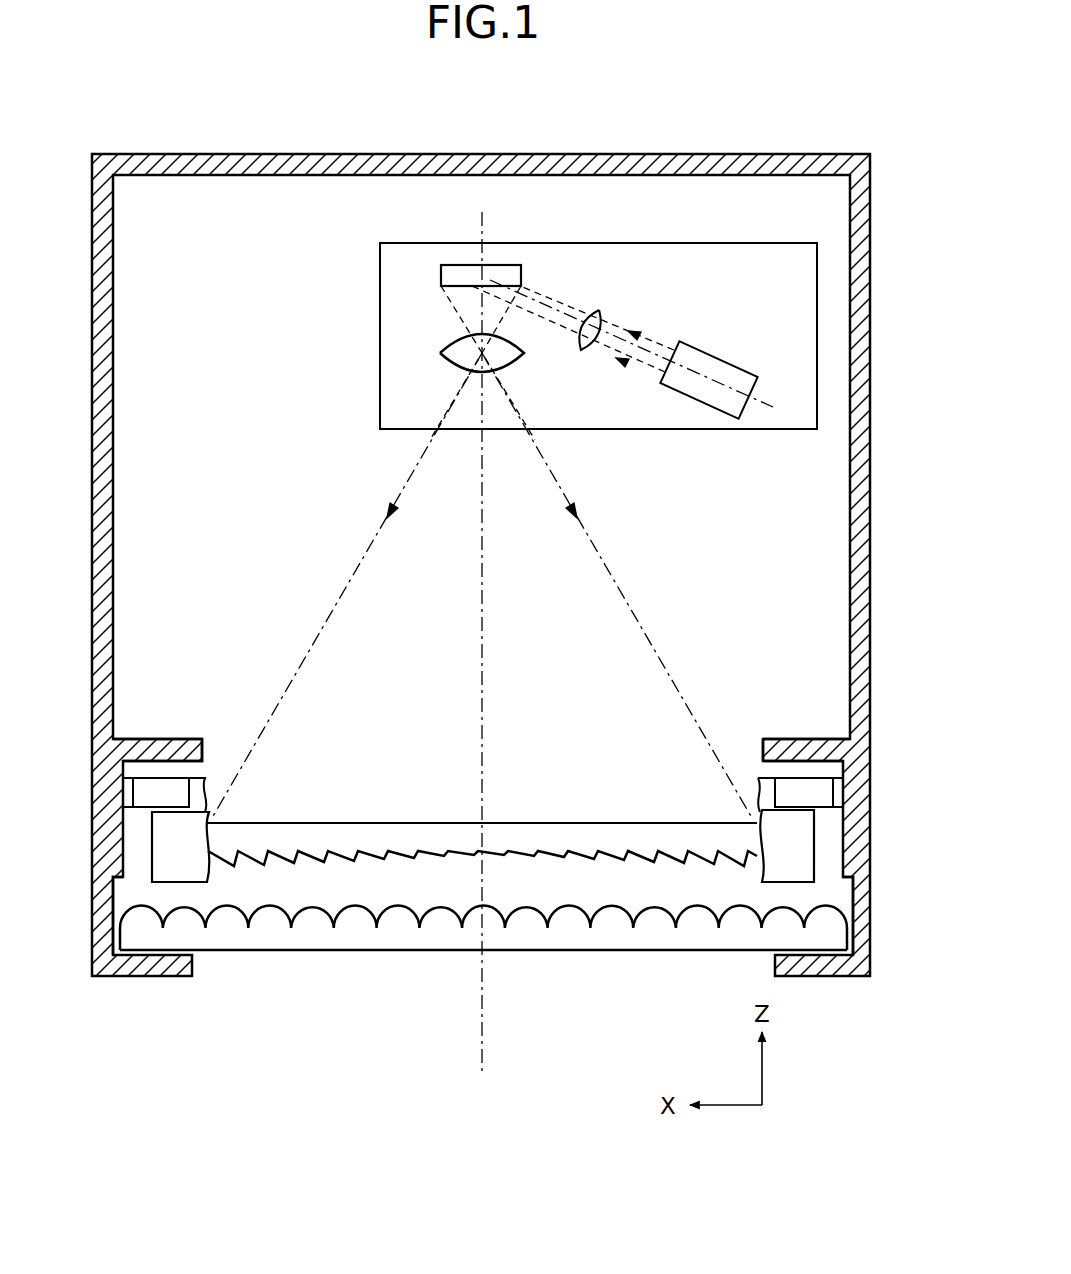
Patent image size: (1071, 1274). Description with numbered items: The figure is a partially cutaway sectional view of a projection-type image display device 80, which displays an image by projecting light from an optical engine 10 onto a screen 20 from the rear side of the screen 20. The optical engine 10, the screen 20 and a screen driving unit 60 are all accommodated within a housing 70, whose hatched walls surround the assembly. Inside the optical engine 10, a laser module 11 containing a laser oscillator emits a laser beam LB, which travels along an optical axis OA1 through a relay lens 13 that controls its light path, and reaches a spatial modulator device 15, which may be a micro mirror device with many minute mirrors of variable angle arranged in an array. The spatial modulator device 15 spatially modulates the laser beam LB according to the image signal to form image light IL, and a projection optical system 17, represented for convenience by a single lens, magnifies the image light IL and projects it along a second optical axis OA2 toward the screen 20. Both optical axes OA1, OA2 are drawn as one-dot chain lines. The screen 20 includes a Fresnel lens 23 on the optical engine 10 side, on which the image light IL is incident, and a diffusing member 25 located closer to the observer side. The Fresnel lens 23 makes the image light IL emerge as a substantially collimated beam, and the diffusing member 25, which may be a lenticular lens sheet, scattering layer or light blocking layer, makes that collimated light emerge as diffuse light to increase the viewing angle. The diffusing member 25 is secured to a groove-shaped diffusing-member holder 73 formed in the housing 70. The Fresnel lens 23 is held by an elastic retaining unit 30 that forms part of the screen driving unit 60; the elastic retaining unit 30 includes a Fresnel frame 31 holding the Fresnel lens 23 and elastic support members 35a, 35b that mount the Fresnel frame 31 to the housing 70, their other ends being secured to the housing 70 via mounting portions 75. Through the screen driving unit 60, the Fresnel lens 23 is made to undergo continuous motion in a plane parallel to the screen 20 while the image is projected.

The projection-type image display device 80 is at (758, 124).
The housing 70 is at (870, 512).
The mounting portions 75 is at (838, 787).
The diffusing-member holder 73 is at (837, 897).
The optical engine 10 is at (750, 240).
The laser module 11 is at (717, 420).
The relay lens 13 is at (593, 312).
The spatial modulator device 15 is at (448, 265).
The projection optical system 17 is at (438, 344).
The screen 20 is at (401, 916).
The Fresnel lens 23 is at (383, 832).
The diffusing member 25 is at (603, 951).
The screen driving unit 60 is at (537, 816).
The elastic retaining unit 30 is at (804, 846).
The Fresnel frame 31 is at (157, 848).
The elastic support member 35a is at (800, 785).
The elastic support member 35b is at (176, 785).
The laser beam LB is at (652, 334).
The image light IL is at (330, 604).
The optical axis OA1 is at (762, 394).
The optical axis OA2 is at (486, 660).